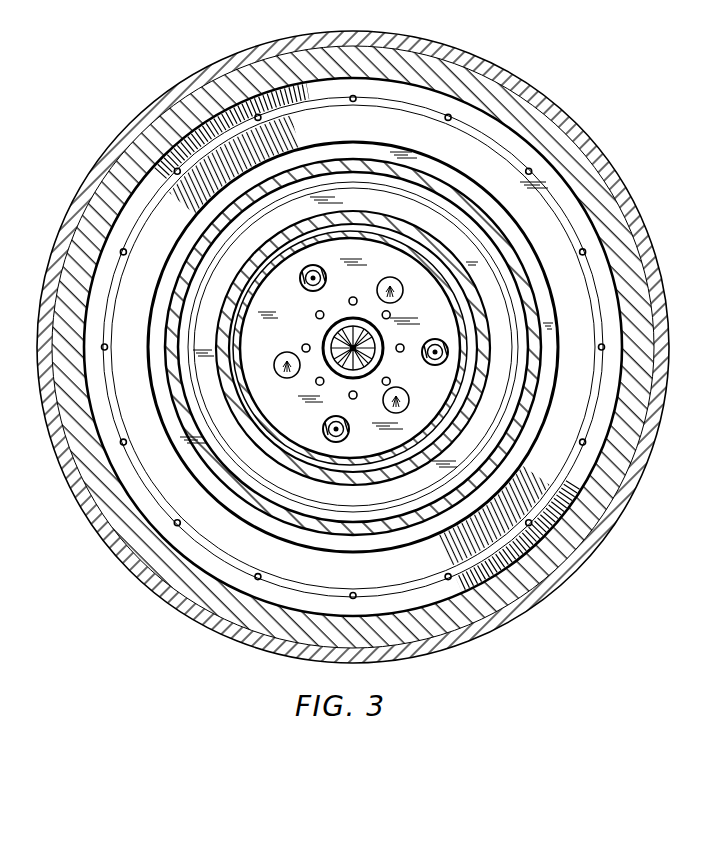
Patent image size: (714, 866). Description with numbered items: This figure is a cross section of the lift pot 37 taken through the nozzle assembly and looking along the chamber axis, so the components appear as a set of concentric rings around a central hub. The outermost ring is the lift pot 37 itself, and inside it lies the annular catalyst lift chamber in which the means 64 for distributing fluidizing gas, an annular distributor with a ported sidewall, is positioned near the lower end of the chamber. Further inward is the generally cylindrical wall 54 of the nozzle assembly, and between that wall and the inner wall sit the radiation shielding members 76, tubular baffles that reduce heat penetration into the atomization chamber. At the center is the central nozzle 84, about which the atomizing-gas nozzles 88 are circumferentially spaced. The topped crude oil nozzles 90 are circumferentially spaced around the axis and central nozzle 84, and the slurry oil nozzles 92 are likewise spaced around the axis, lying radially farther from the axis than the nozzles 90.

The lift pot 37 is at (155, 102).
The means for distributing fluidizing gas 64 is at (288, 114).
The generally cylindrical wall 54 is at (362, 161).
The radiation shielding members 76 is at (407, 218).
The central nozzle 84 is at (326, 335).
The nozzles 88 is at (414, 372).
The nozzles 90 is at (282, 353).
The nozzles 92 is at (302, 286).